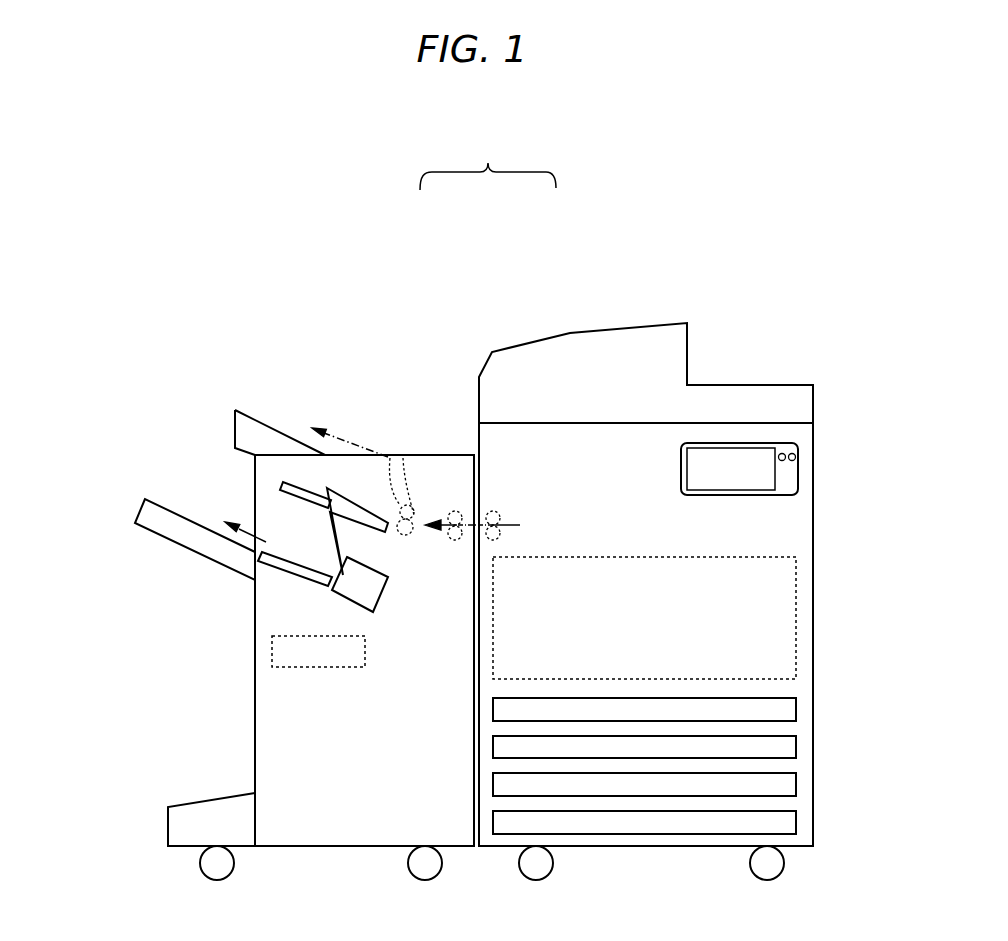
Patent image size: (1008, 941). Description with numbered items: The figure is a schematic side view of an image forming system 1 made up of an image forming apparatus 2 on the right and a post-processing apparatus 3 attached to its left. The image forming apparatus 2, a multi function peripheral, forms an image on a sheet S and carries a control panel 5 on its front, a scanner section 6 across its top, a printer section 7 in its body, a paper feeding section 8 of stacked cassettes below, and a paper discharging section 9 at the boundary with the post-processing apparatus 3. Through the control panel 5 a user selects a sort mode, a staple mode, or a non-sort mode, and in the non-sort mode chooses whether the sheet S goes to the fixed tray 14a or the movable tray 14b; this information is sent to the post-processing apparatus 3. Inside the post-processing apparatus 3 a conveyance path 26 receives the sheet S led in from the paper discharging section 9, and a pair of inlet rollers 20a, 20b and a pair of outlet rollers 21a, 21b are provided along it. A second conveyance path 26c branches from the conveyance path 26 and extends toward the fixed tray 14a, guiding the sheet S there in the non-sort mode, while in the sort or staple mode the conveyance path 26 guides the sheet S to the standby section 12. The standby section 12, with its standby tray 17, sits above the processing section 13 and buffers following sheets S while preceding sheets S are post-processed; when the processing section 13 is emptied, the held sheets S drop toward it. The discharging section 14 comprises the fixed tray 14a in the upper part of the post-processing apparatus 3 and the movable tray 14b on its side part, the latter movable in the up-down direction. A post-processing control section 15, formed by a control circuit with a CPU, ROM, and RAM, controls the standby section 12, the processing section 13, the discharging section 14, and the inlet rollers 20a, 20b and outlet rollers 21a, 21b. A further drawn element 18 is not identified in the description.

The image forming system 1 is at (488, 162).
The image forming apparatus 2 is at (570, 280).
The post-processing apparatus 3 is at (395, 282).
The control panel 5 is at (798, 468).
The scanner section 6 is at (733, 372).
The printer section 7 is at (796, 617).
The paper feeding section 8 is at (796, 708).
The paper discharging section 9 is at (513, 503).
The sheet S is at (520, 525).
The standby section 12 is at (398, 535).
The processing section 13 is at (388, 595).
The discharging section 14 is at (182, 474).
The fixed tray 14a is at (235, 430).
The movable tray 14b is at (140, 512).
The post-processing control section 15 is at (365, 650).
The standby tray 17 is at (302, 490).
The lower tray 18 is at (290, 572).
The inlet roller 20a is at (460, 508).
The inlet roller 20b is at (500, 540).
The outlet roller 21a is at (390, 458).
The outlet roller 21b is at (413, 533).
The conveyance path 26 is at (418, 514).
The second conveyance path 26c is at (353, 440).